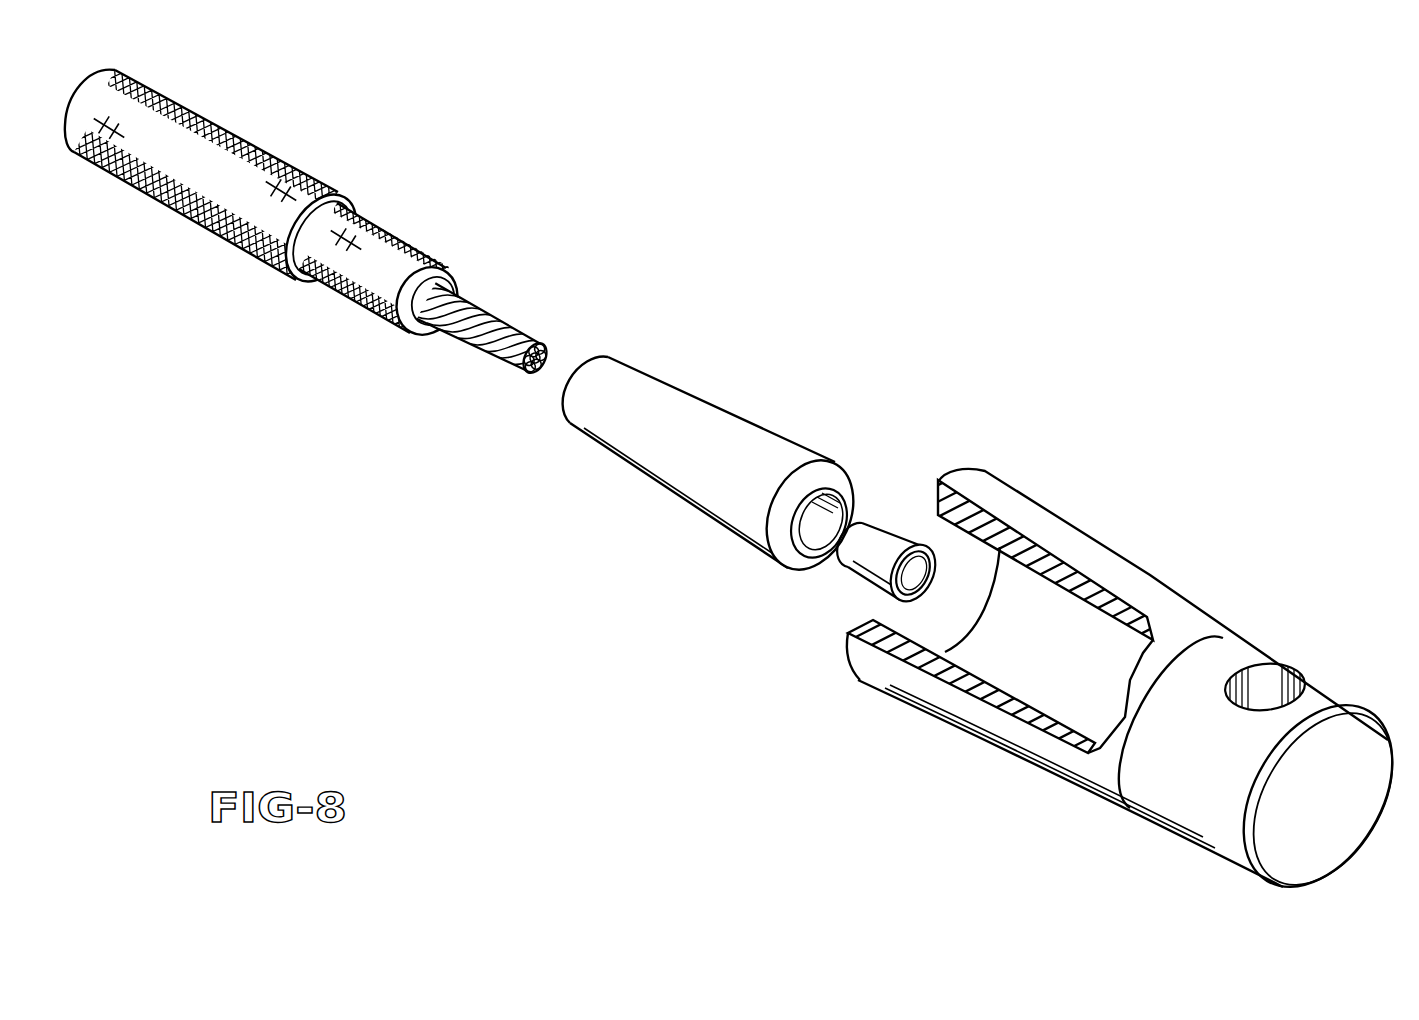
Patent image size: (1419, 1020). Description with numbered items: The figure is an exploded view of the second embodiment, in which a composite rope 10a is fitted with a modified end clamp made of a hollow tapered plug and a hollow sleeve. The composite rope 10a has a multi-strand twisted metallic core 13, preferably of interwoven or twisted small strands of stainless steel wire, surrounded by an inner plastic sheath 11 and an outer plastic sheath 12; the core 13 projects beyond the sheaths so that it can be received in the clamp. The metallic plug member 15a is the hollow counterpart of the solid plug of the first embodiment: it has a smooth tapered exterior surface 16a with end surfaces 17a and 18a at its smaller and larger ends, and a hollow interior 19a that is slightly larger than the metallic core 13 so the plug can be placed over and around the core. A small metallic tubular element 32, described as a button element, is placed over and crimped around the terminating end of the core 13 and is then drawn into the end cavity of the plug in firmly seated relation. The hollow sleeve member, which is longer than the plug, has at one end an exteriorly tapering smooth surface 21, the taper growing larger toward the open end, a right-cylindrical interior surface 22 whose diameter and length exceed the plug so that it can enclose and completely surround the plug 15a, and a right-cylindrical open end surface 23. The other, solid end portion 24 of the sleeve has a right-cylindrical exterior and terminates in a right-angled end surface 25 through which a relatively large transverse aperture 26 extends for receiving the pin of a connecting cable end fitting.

The composite rope 10a is at (302, 188).
The inner plastic sheath 11 is at (383, 228).
The outer plastic sheath 12 is at (186, 214).
The multi-strand twisted metallic core 13 is at (504, 320).
The metallic plug member 15a is at (736, 473).
The ferrule body 16a is at (729, 466).
The ferrule rear end 17a is at (592, 360).
The ferrule front face 18a is at (836, 476).
The hollow interior 19a is at (818, 530).
The sleeve 32 is at (878, 522).
The exteriorly tapering smooth surface 21 is at (1034, 619).
The interior surface 22 is at (1060, 650).
The right-cylindrical open end surface 23 is at (972, 466).
The solid end portion 24 is at (1263, 653).
The right-angled end surface 25 is at (1325, 803).
The transverse aperture 26 is at (1273, 688).